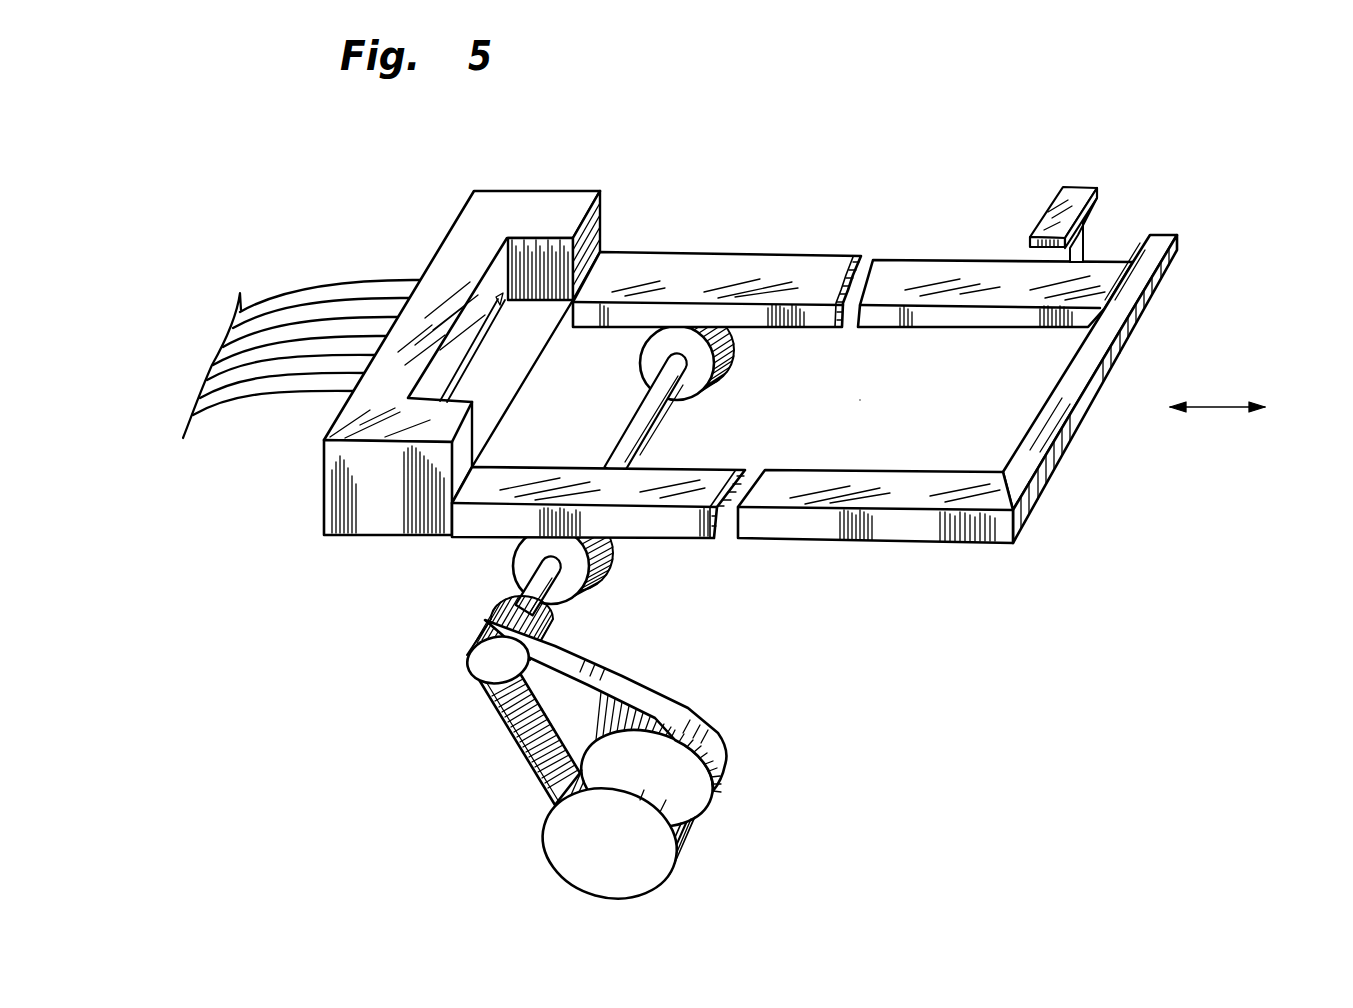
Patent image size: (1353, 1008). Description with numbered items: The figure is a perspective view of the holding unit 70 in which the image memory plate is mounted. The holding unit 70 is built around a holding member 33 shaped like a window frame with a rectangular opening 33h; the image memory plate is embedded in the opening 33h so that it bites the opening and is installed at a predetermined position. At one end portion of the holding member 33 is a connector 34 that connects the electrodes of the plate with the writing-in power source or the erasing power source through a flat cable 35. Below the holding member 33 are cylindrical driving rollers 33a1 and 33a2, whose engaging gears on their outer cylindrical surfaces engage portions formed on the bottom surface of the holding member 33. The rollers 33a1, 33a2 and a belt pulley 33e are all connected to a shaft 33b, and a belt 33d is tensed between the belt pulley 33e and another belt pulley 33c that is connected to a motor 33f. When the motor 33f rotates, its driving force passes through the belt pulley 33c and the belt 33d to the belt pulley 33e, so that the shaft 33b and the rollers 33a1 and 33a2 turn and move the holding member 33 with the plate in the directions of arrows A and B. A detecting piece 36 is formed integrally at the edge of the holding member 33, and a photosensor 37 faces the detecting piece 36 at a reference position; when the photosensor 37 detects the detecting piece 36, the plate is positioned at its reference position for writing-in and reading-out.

The holding unit 70 is at (802, 135).
The holding member 33 is at (1043, 497).
The driving roller 33a1 is at (547, 588).
The driving roller 33a2 is at (740, 340).
The shaft 33b is at (650, 405).
The belt pulley 33c is at (695, 787).
The belt 33d is at (532, 752).
The belt pulley 33e is at (478, 662).
The motor 33f is at (648, 865).
The rectangular opening 33h is at (923, 427).
The connector 34 is at (497, 297).
The flat cable 35 is at (318, 296).
The detecting piece 36 is at (1167, 232).
The photosensor 37 is at (1082, 186).